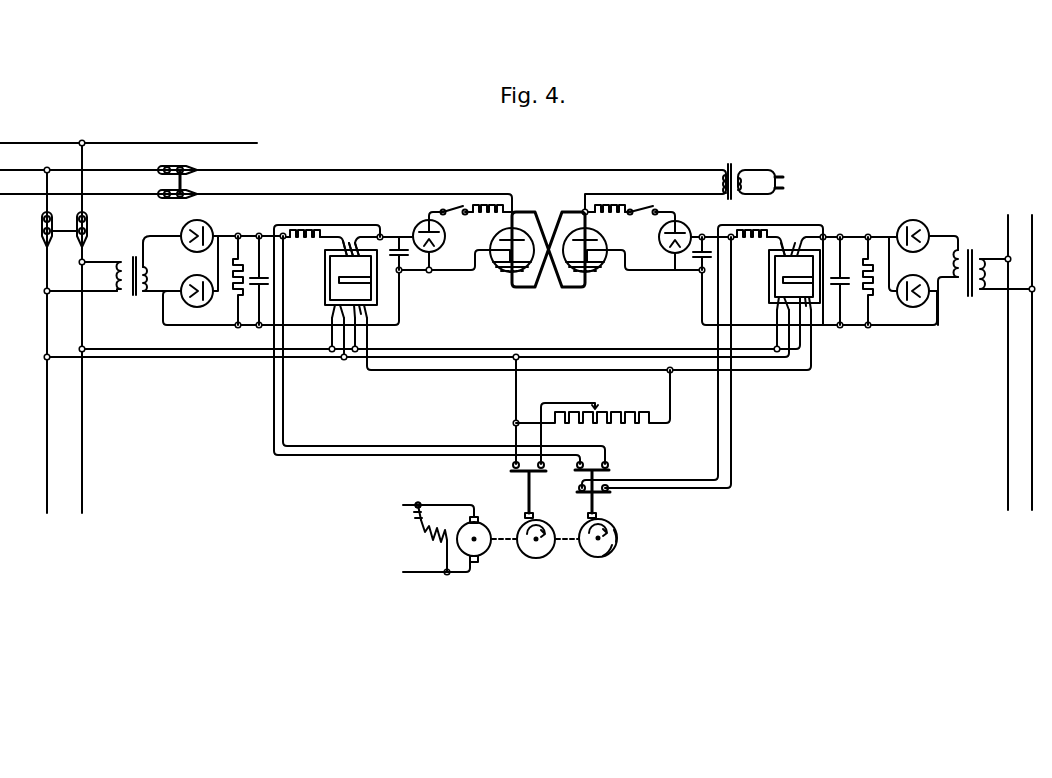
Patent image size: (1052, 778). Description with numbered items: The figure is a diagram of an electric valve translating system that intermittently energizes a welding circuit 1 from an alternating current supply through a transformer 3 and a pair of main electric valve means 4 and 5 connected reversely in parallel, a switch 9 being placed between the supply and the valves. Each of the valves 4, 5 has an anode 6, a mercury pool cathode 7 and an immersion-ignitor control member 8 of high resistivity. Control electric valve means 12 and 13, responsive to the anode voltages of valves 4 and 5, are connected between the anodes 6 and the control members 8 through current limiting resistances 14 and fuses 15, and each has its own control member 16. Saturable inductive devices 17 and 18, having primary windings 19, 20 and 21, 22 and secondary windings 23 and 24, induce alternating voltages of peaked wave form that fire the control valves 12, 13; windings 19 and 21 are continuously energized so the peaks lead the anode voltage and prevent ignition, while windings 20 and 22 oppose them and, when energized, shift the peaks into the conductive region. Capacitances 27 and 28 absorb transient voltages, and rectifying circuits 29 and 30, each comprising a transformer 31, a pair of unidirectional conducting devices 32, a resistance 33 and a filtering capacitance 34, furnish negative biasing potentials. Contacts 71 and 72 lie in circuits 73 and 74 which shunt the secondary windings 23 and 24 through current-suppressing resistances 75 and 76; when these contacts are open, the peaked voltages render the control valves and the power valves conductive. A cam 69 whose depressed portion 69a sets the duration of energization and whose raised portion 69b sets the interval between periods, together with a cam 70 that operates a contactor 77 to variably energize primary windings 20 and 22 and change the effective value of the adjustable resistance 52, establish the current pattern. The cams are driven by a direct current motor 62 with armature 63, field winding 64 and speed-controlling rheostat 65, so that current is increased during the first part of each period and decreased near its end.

The welding circuit 1 is at (770, 195).
The transformer 3 is at (731, 168).
The main electric valve means 4 is at (493, 231).
The main electric valve means 5 is at (605, 240).
The anode 6 is at (518, 238).
The mercury pool cathode 7 is at (500, 275).
The control member 8 is at (494, 266).
The switch 9 is at (181, 197).
The control electric valve means 12 is at (427, 229).
The control electric valve means 13 is at (689, 230).
The current limiting resistance 14 is at (553, 220).
The fuse 15 is at (553, 218).
The control member 16 is at (438, 243).
The saturable inductive device 17 is at (318, 300).
The saturable inductive device 18 is at (762, 303).
The primary winding 19 is at (330, 312).
The primary winding 20 is at (365, 314).
The primary winding 21 is at (772, 312).
The primary winding 22 is at (810, 314).
The secondary winding 23 is at (354, 242).
The secondary winding 24 is at (793, 240).
The capacitance 27 is at (392, 251).
The capacitance 28 is at (698, 270).
The rectifying circuit 29 is at (178, 273).
The rectifying circuit 30 is at (944, 268).
The transformer 31 is at (133, 260).
The unidirectional conducting devices 32 is at (555, 263).
The resistance 33 is at (232, 292).
The capacitance 34 is at (553, 280).
The adjustable resistance 52 is at (593, 417).
The direct current motor 62 is at (443, 593).
The armature 63 is at (485, 552).
The field winding 64 is at (429, 546).
The rheostat 65 is at (414, 520).
The cam 69 is at (608, 583).
The depressed portion 69a is at (611, 550).
The raised portion 69b is at (618, 531).
The cam 70 is at (548, 585).
The contact 71 is at (609, 467).
The contact 72 is at (610, 492).
The circuit 73 is at (283, 433).
The circuit 74 is at (718, 431).
The current-suppressing resistance 75 is at (305, 245).
The current-suppressing resistance 76 is at (752, 246).
The switch 77 is at (512, 466).